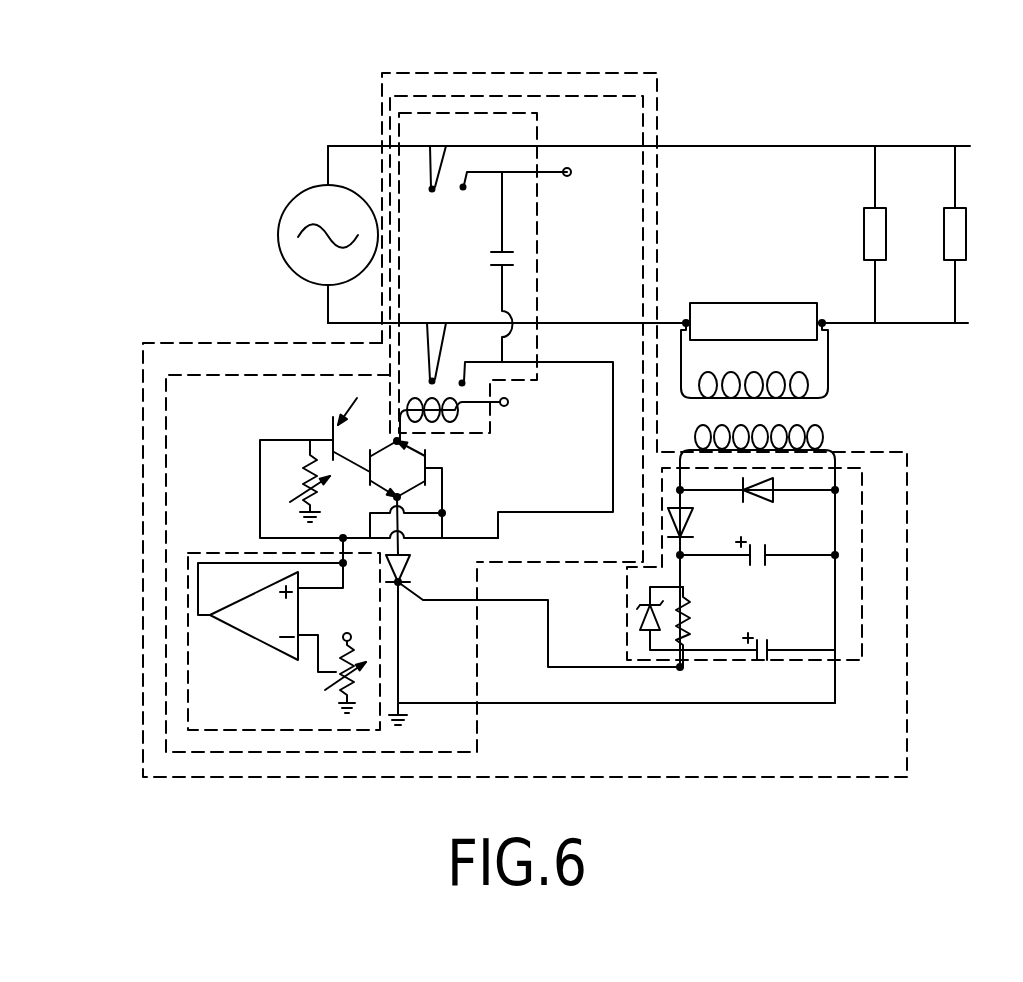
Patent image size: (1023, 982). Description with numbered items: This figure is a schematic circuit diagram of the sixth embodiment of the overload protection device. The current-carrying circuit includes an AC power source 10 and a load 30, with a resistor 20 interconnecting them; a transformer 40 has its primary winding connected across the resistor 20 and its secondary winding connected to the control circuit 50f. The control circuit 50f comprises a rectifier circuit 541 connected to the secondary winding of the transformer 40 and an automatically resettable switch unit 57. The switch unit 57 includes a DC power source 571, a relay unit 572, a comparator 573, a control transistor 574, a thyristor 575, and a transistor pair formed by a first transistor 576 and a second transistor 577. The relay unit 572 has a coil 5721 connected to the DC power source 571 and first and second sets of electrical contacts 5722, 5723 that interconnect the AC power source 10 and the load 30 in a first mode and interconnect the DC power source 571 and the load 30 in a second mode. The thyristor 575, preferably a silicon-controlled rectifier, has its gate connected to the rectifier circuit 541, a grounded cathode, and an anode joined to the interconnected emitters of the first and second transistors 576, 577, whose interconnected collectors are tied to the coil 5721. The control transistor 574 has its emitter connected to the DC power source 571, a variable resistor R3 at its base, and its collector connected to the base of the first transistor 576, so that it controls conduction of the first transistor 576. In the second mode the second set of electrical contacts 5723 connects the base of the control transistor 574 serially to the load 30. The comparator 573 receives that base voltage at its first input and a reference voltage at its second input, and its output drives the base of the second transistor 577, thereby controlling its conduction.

The AC power source 10 is at (278, 222).
The resistor 20 is at (748, 303).
The load 30 is at (864, 212).
The transformer 40 is at (820, 425).
The control circuit 50f is at (907, 545).
The rectifier circuit 541 is at (862, 610).
The switch unit 57 is at (645, 238).
The DC power source 571 is at (568, 178).
The relay unit 572 is at (454, 113).
The coil 5721 is at (453, 416).
The first set of electrical contacts 5722 is at (452, 191).
The second set of electrical contacts 5723 is at (436, 322).
The comparator 573 is at (166, 670).
The control transistor 574 is at (330, 422).
The thyristor 575 is at (410, 605).
The first transistor 576 is at (366, 450).
The second transistor 577 is at (398, 441).
The variable resistor R3 is at (379, 489).